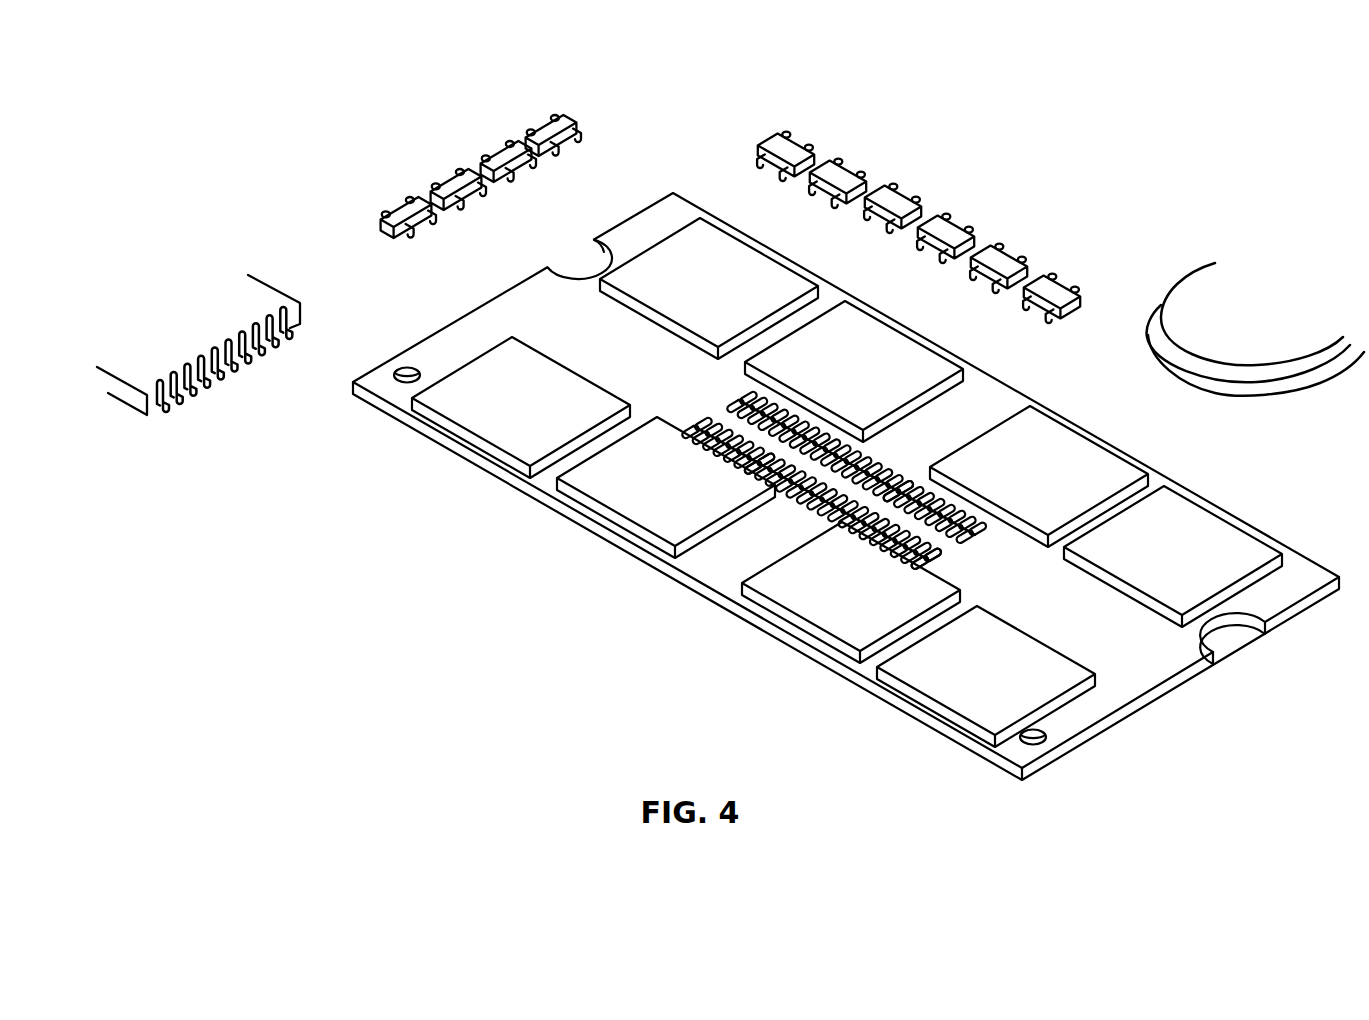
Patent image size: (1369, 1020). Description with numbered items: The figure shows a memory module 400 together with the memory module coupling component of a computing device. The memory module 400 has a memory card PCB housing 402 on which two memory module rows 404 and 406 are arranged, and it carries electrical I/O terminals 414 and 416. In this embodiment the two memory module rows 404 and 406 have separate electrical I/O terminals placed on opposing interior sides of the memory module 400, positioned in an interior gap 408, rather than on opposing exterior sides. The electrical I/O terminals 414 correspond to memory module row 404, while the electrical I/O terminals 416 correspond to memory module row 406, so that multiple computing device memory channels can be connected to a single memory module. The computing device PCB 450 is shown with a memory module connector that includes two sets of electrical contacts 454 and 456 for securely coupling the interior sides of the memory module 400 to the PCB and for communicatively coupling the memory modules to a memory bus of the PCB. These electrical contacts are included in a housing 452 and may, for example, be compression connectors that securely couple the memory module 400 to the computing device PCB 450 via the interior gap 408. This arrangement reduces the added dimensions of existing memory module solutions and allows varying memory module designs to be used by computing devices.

The memory module 400 is at (1243, 676).
The memory card PCB housing 402 is at (662, 212).
The memory module row 404 is at (1168, 522).
The memory module row 406 is at (930, 677).
The interior gap 408 is at (737, 412).
The electrical I/O terminals 414 is at (910, 472).
The electrical I/O terminals 416 is at (837, 510).
The computing device PCB 450 is at (638, 128).
The housing 452 is at (790, 407).
The electrical contacts 454 is at (957, 522).
The electrical contacts 456 is at (935, 537).